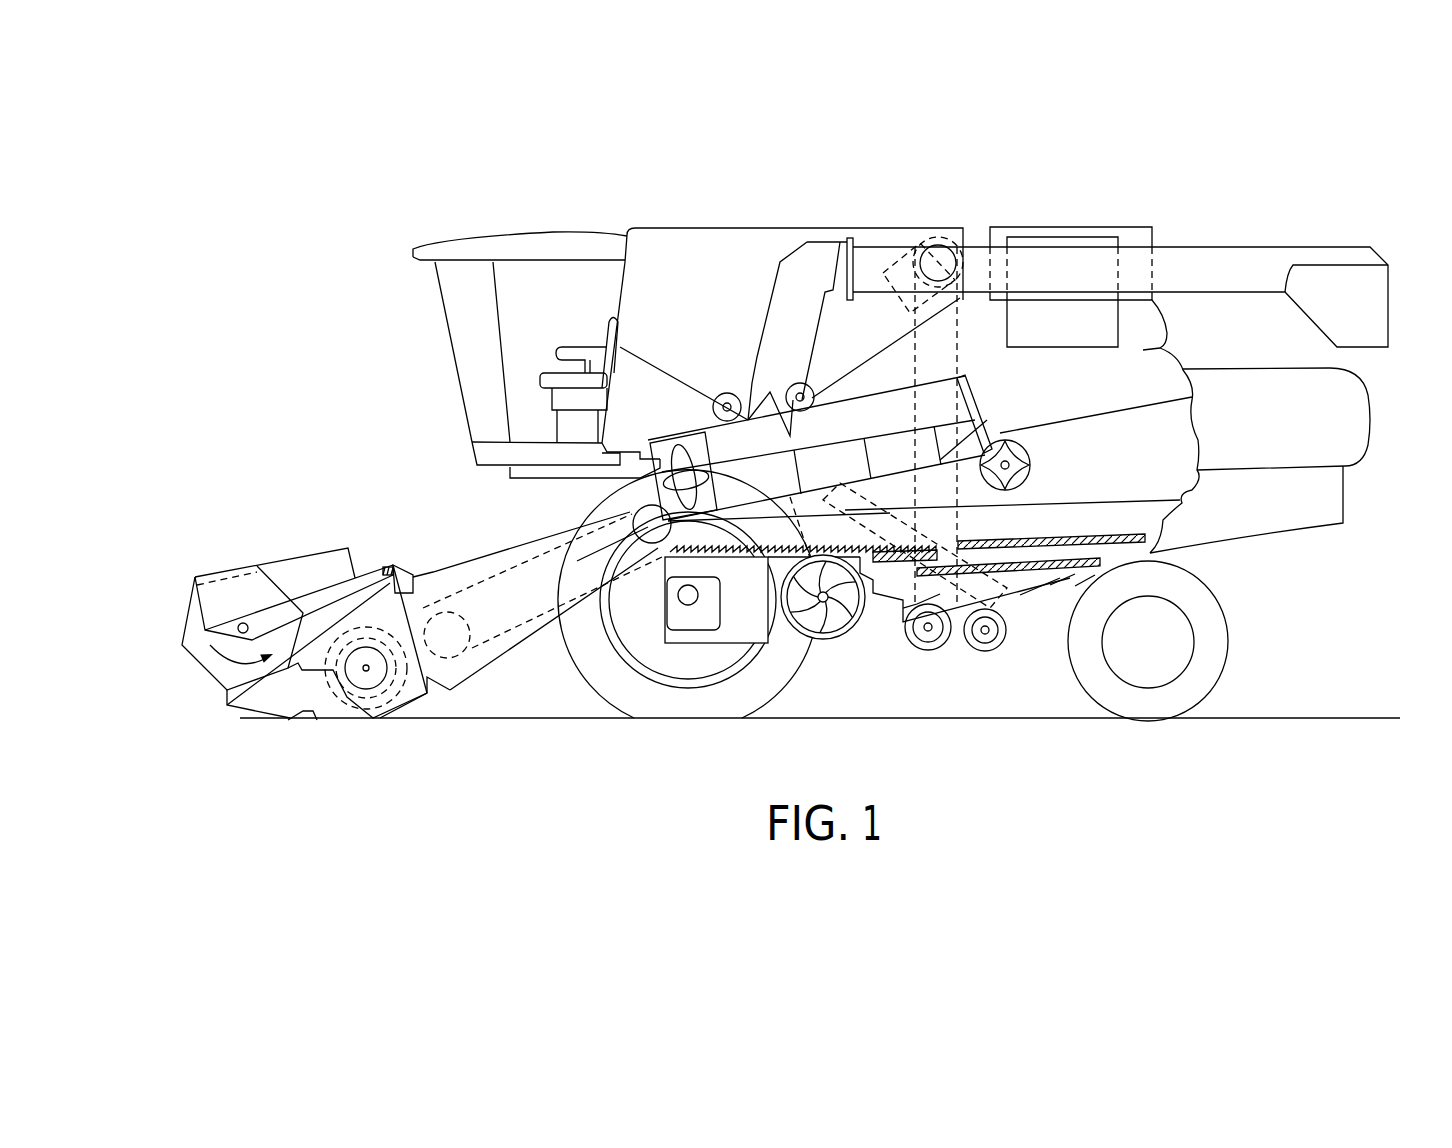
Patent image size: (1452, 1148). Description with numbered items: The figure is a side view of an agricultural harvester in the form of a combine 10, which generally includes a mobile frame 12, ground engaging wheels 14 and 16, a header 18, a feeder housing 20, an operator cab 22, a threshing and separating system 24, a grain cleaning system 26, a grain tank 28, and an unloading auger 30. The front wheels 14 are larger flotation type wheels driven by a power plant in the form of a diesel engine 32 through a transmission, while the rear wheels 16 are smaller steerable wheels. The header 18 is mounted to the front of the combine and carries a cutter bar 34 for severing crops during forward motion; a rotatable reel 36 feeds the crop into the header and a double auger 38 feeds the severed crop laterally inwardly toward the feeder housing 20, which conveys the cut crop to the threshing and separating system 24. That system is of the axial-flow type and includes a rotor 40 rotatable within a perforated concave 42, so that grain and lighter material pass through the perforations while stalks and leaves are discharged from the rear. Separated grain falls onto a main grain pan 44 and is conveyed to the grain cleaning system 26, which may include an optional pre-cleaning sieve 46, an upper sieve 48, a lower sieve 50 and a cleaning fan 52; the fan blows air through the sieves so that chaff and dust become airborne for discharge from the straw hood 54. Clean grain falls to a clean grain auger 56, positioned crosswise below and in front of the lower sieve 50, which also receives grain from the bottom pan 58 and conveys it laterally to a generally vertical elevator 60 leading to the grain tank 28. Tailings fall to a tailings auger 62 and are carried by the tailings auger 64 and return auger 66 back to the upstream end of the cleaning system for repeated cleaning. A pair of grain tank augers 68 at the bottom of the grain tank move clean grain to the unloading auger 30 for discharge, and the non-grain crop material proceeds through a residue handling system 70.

The combine 10 is at (512, 222).
The mobile frame 12 is at (1160, 560).
The front wheels 14 is at (592, 668).
The rear wheels 16 is at (1228, 661).
The header 18 is at (282, 552).
The feeder housing 20 is at (485, 553).
The operator cab 22 is at (448, 332).
The threshing and separating system 24 is at (582, 492).
The grain cleaning system 26 is at (880, 670).
The grain tank 28 is at (669, 238).
The unloading auger 30 is at (1238, 258).
The diesel engine 32 is at (1050, 240).
The cutter bar 34 is at (291, 720).
The rotatable reel 36 is at (190, 617).
The double auger 38 is at (365, 672).
The rotor 40 is at (678, 446).
The perforated concave 42 is at (865, 415).
The main grain pan 44 is at (662, 573).
The pre-cleaning sieve 46 is at (960, 545).
The upper sieve 48 is at (1066, 544).
The lower sieve 50 is at (1037, 572).
The cleaning fan 52 is at (827, 640).
The straw hood 54 is at (1355, 407).
The clean grain auger 56 is at (932, 650).
The bottom pan 58 is at (1063, 578).
The elevator 60 is at (960, 356).
The tailings auger 62 is at (1082, 580).
The tailings auger 64 is at (985, 651).
The return auger 66 is at (905, 532).
The grain tank augers 68 is at (722, 396).
The residue handling system 70 is at (1318, 556).